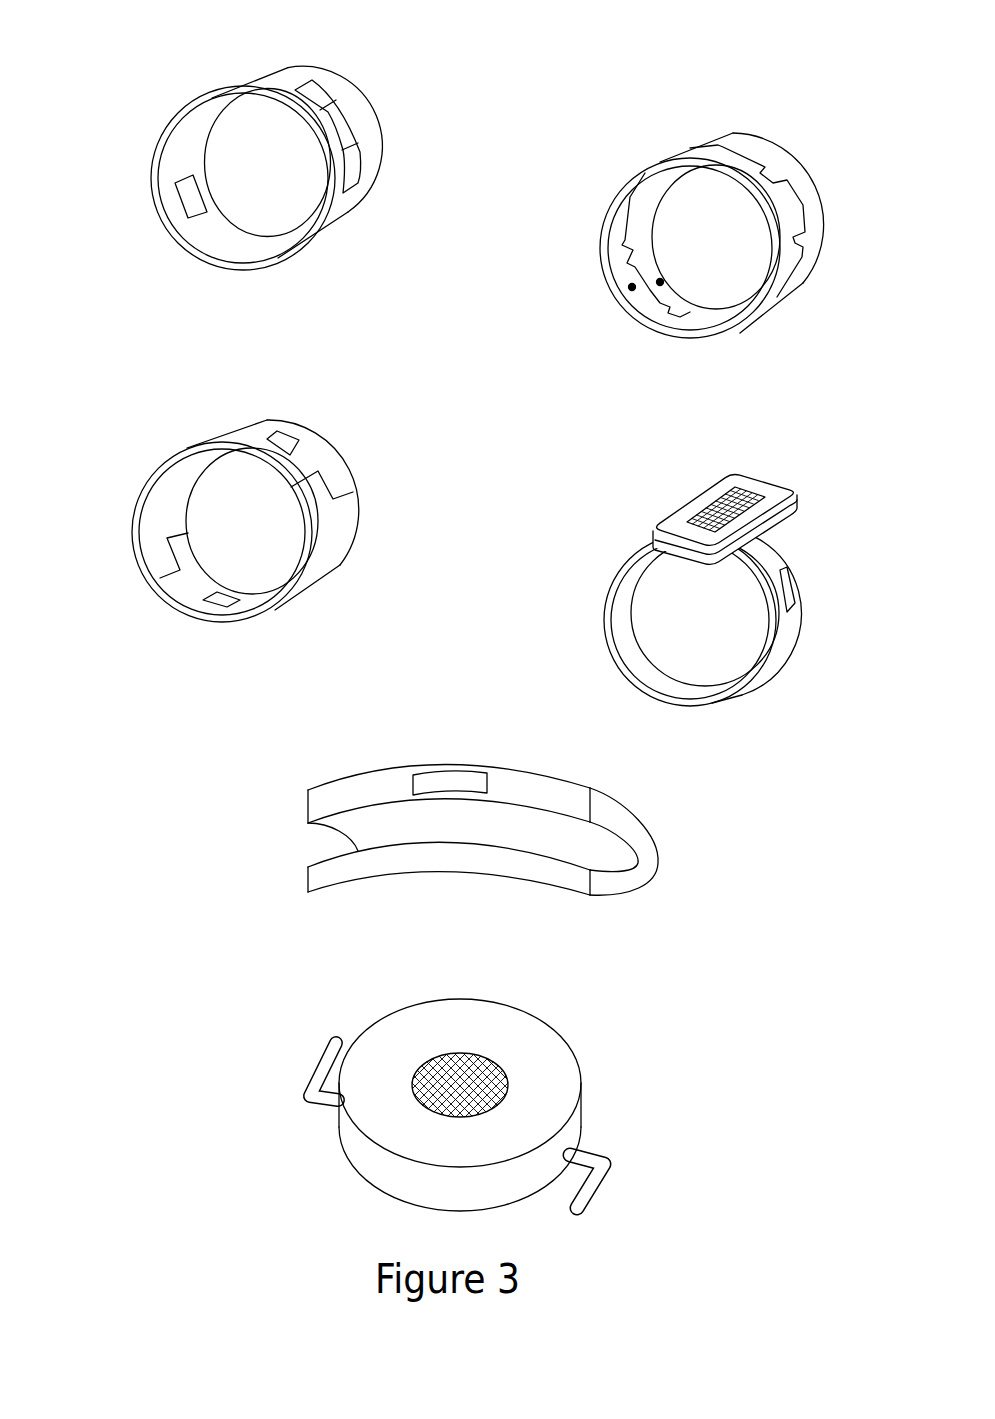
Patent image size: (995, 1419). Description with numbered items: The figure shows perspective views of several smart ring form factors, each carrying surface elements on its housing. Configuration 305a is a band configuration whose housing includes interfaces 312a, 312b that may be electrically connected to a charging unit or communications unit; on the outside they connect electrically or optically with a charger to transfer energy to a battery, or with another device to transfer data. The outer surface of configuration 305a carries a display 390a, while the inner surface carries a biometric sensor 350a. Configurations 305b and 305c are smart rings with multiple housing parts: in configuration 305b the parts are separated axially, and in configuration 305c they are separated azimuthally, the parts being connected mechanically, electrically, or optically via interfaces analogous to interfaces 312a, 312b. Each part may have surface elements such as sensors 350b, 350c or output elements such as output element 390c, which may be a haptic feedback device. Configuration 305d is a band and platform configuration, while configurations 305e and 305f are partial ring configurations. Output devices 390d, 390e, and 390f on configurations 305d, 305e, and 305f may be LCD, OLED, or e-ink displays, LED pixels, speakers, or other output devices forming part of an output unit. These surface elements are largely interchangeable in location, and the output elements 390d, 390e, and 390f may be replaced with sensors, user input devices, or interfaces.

The configuration 305a is at (268, 145).
The interface 312a is at (210, 95).
The interface 312b is at (274, 259).
The display 390a is at (350, 132).
The biometric sensor 350a is at (188, 199).
The configuration 305b is at (673, 221).
The sensor 350b is at (628, 285).
The sensor 350c is at (657, 286).
The configuration 305c is at (229, 520).
The output element 390c is at (291, 441).
The configuration 305d is at (660, 580).
The output device 390d is at (713, 505).
The configuration 305e is at (478, 797).
The output device 390e is at (450, 780).
The configuration 305f is at (452, 1080).
The output device 390f is at (460, 1062).